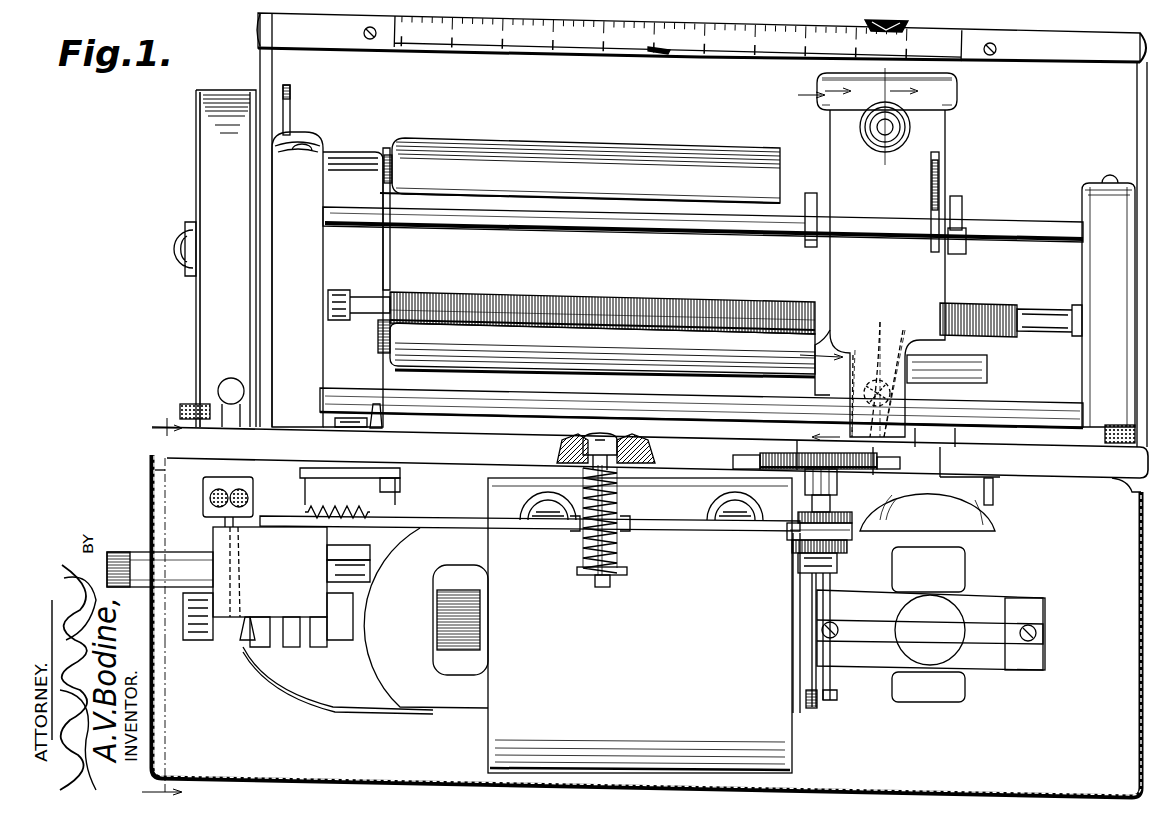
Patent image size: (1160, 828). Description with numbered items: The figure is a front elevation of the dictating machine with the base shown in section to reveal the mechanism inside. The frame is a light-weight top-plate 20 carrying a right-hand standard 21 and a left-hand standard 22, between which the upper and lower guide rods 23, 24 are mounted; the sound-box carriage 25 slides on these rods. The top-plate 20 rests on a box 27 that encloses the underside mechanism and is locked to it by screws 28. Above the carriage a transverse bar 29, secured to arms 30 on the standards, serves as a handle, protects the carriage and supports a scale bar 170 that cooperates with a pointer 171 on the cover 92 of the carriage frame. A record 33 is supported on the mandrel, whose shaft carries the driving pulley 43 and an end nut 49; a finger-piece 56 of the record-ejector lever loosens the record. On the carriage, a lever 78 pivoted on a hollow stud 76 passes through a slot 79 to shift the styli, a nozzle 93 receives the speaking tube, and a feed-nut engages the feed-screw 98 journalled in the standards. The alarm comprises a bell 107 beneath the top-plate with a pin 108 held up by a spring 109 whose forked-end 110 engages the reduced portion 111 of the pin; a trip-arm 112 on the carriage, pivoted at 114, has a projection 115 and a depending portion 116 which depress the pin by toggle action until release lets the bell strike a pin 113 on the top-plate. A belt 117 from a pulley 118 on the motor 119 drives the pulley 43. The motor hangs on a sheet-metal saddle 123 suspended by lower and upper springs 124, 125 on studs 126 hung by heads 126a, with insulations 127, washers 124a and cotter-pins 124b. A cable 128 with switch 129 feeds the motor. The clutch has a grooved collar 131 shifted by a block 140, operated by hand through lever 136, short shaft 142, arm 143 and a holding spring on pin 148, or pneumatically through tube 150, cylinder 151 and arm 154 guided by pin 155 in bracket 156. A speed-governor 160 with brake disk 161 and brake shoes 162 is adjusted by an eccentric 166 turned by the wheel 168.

The top-plate 20 is at (150, 438).
The right-hand standard 21 is at (1090, 279).
The left-hand standard 22 is at (300, 272).
The upper guide rod 23 is at (432, 206).
The lower guide rod 24 is at (340, 395).
The sound-box carriage 25 is at (815, 128).
The box 27 is at (156, 500).
The screws 28 is at (180, 410).
The transverse bar 29 is at (332, 43).
The arms 30 is at (265, 69).
The record 33 is at (657, 150).
The driving pulley 43 is at (196, 153).
The nut 49 is at (170, 250).
The finger-piece 56 is at (291, 108).
The hollow stud 76 is at (805, 245).
The lever 78 is at (940, 165).
The slot 79 is at (938, 222).
The cover 92 is at (957, 93).
The nozzle 93 is at (912, 128).
The feed-screw 98 is at (624, 298).
The bell 107 is at (980, 530).
The pin 108 is at (960, 420).
The spring 109 is at (958, 475).
The forked-end 110 is at (907, 477).
The reduced portion 111 is at (993, 490).
The trip-arm 112 is at (913, 373).
The pin 113 is at (995, 497).
The pivot 114 is at (884, 365).
The projection 115 is at (965, 368).
The depending portion 116 is at (846, 375).
The belt 117 is at (207, 290).
The pulley 118 is at (190, 620).
The motor 119 is at (500, 718).
The sheet-metal saddle 123 is at (710, 530).
The lower springs 124 is at (617, 553).
The washers 124a is at (628, 572).
The cotter-pins 124b is at (590, 575).
The upper springs 125 is at (617, 497).
The studs 126 is at (605, 587).
The heads 126a is at (650, 445).
The insulations 127 is at (538, 525).
The cable 128 is at (293, 692).
The switch 129 is at (222, 392).
The grooved collar 131 is at (303, 645).
The lever (finger-piece) 136 is at (380, 408).
The block of insulating material 140 is at (297, 650).
The short shaft 142 is at (400, 472).
The arm 143 is at (400, 486).
The pin 148 is at (400, 531).
The flexible tube 150 is at (140, 565).
The cylinder 151 is at (255, 600).
The arm 154 is at (337, 572).
The pin 155 is at (327, 546).
The bracket 156 is at (308, 512).
The speed-governor 160 is at (1016, 657).
The brake disk 161 is at (812, 708).
The brake shoes 162 is at (813, 580).
The eccentric 166 is at (852, 553).
The finger-piece or wheel 168 is at (797, 440).
The scale bar 170 is at (668, 55).
The pointer 171 is at (878, 47).